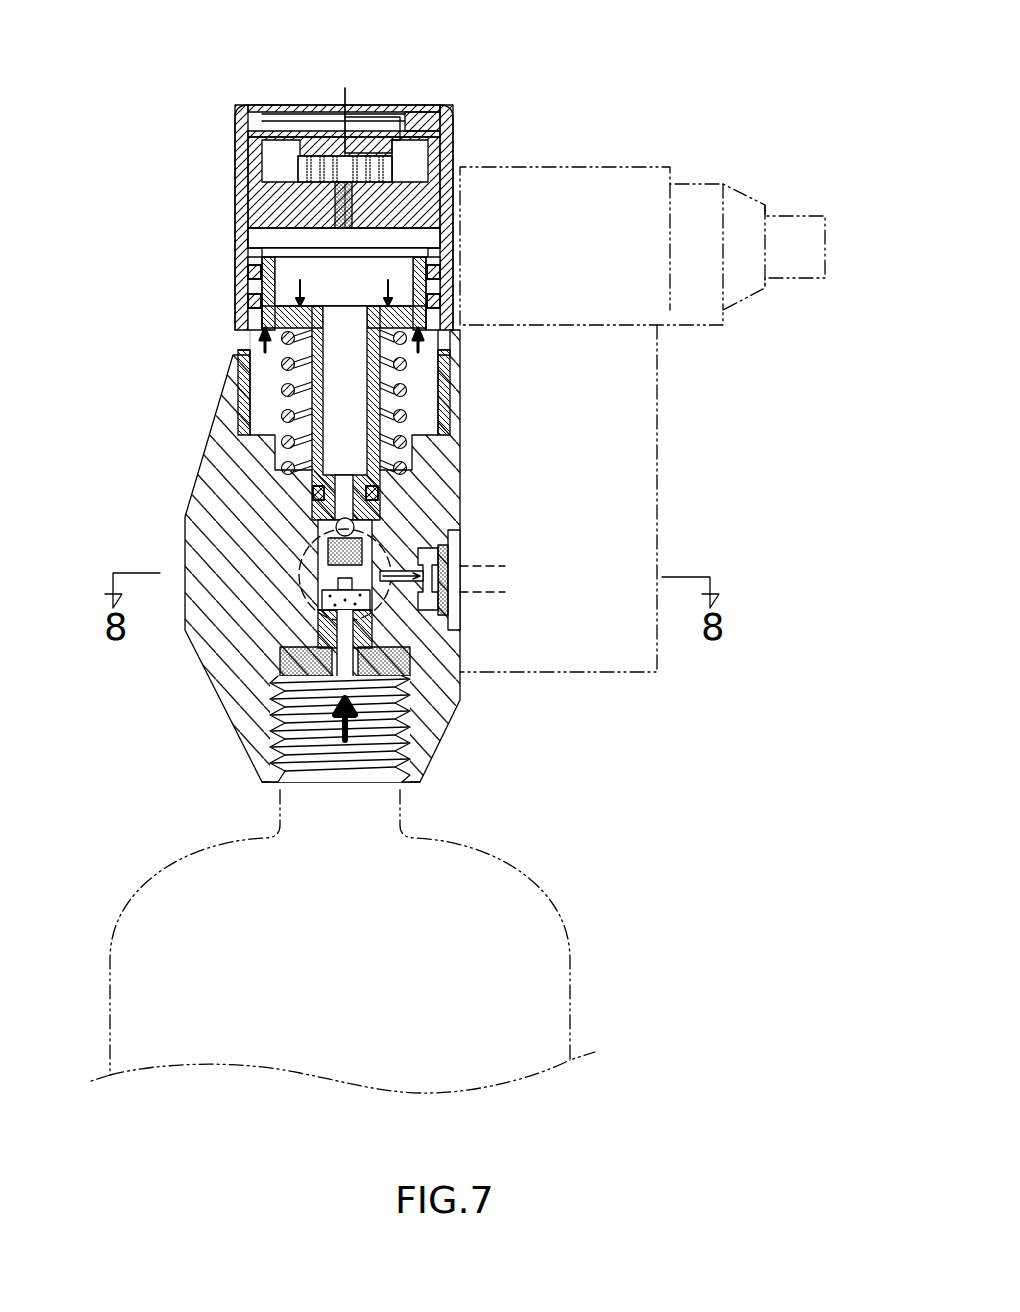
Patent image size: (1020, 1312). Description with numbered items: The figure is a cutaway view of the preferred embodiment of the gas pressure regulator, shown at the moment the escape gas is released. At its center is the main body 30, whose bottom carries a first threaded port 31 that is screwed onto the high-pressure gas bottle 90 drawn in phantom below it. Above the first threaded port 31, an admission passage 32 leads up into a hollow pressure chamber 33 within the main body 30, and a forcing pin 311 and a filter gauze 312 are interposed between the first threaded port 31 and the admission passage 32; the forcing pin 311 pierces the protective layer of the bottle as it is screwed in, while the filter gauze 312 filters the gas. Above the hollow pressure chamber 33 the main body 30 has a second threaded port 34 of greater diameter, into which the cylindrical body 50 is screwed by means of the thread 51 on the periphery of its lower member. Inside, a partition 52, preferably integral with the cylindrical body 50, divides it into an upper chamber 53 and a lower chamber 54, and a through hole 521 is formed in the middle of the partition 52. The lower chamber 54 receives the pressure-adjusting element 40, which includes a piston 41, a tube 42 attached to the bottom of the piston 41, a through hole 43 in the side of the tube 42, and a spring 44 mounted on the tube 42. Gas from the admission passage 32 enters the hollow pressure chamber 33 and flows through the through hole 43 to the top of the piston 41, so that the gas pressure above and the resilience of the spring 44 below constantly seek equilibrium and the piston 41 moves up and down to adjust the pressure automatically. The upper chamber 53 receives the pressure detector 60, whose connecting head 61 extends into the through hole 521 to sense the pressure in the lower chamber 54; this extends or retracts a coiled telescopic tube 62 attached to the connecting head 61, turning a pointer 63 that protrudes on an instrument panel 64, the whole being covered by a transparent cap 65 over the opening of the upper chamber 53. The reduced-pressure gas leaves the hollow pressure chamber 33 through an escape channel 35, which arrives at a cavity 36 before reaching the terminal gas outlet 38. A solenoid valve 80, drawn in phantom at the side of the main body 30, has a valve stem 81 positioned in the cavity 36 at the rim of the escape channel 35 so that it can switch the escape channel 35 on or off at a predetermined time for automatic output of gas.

The main body 30 is at (182, 535).
The first threaded port 31 is at (283, 728).
The forcing pin 311 is at (340, 692).
The filter gauze 312 is at (320, 637).
The admission passage 32 is at (320, 605).
The hollow pressure chamber 33 is at (313, 543).
The second threaded port 34 is at (237, 437).
The escape channel 35 is at (398, 660).
The cavity 36 is at (428, 600).
The terminal gas outlet 38 is at (422, 752).
The pressure-adjusting element 40 is at (540, 345).
The piston 41 is at (430, 312).
The tube 42 is at (402, 383).
The through hole 43 is at (344, 506).
The spring 44 is at (405, 428).
The cylindrical body 50 is at (128, 123).
The thread 51 is at (236, 360).
The partition 52 is at (262, 202).
The through hole 521 is at (262, 258).
The upper chamber 53 is at (282, 158).
The lower chamber 54 is at (258, 395).
The pressure detector 60 is at (595, 18).
The connecting head 61 is at (462, 205).
The coiled telescopic tube 62 is at (448, 160).
The pointer 63 is at (415, 124).
The instrument panel 64 is at (445, 136).
The transparent cap 65 is at (395, 110).
The solenoid valve 80 is at (658, 420).
The valve stem 81 is at (435, 573).
The high-pressure gas bottle 90 is at (555, 912).